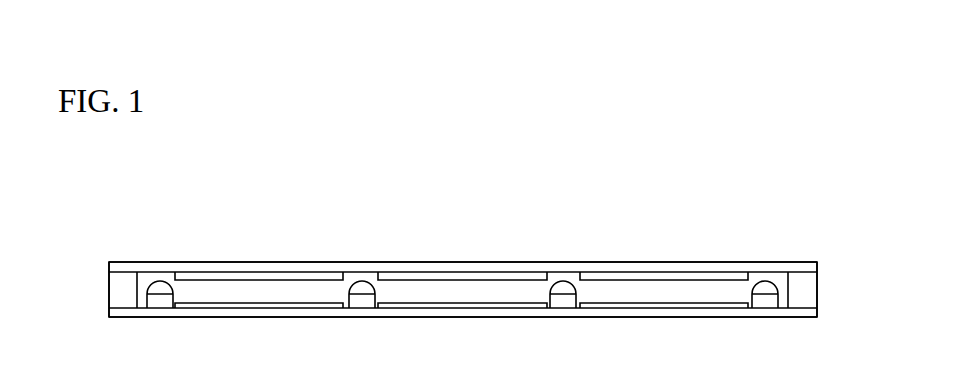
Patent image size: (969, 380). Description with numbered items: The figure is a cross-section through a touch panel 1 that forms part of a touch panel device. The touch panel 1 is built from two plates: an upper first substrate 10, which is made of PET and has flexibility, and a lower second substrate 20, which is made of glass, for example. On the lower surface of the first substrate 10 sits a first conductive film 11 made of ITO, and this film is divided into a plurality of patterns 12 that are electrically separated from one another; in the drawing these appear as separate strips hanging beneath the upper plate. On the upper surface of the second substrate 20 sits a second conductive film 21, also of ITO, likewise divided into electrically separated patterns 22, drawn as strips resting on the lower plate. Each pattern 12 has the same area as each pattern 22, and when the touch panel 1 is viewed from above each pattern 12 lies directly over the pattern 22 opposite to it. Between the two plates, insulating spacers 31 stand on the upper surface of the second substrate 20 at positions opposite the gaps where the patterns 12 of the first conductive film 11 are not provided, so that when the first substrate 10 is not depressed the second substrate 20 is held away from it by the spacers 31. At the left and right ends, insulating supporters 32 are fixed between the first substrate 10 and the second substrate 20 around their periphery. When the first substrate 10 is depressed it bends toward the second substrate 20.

The touch panel 1 is at (467, 154).
The first substrate 10 is at (326, 268).
The first conductive film 11 is at (461, 246).
The patterns 12 is at (228, 276).
The second substrate 20 is at (240, 313).
The second conductive film 21 is at (461, 334).
The patterns 22 is at (270, 303).
The spacers 31 is at (160, 296).
The supporters 32 is at (112, 297).